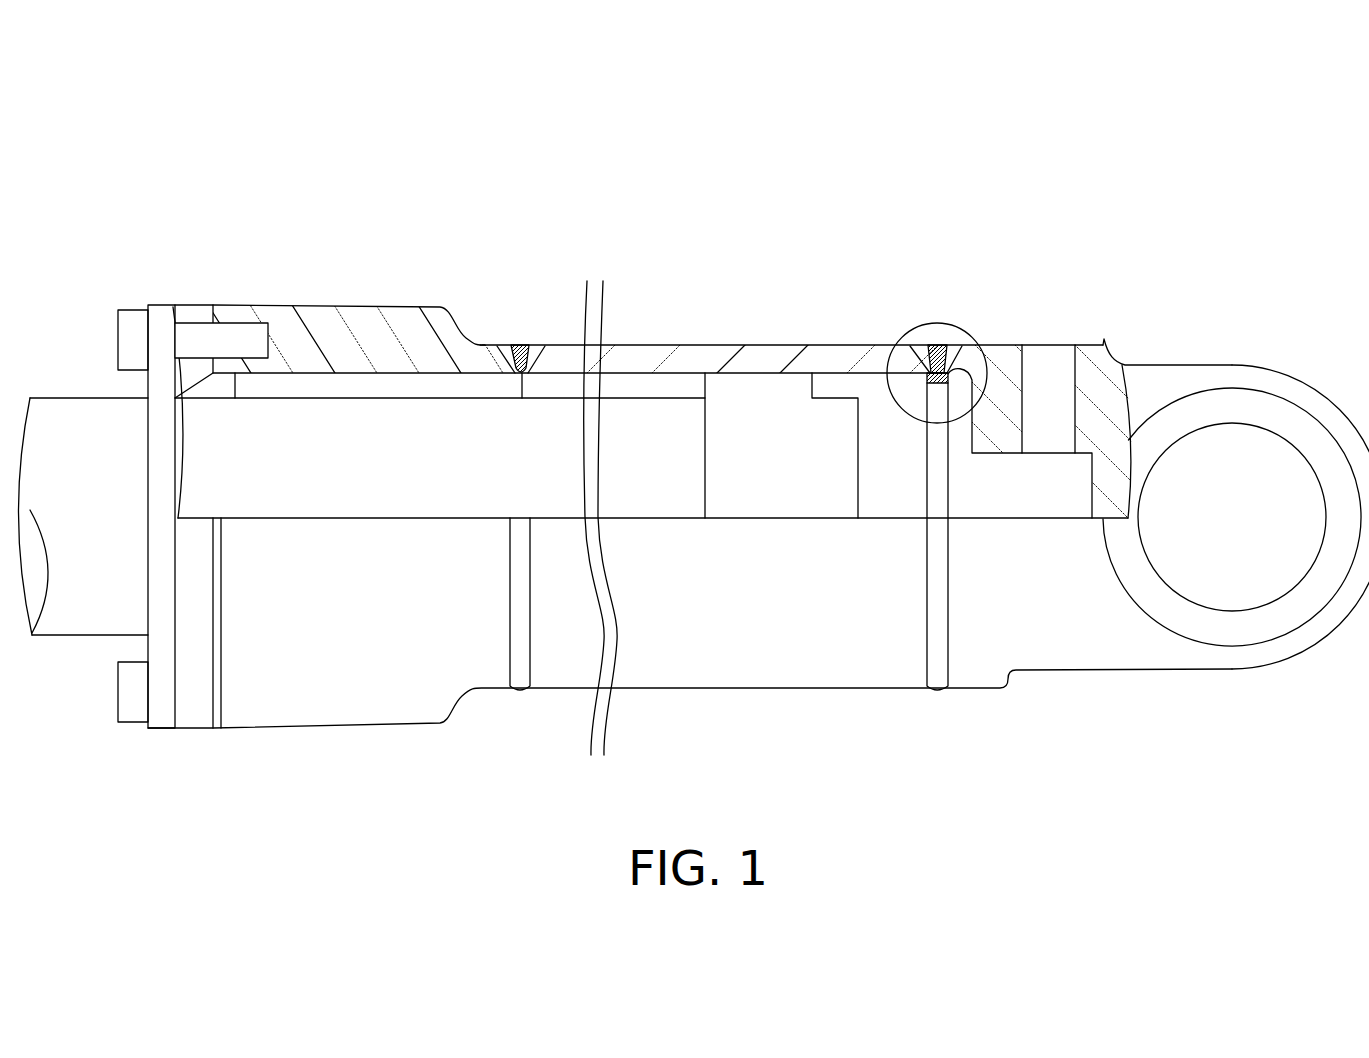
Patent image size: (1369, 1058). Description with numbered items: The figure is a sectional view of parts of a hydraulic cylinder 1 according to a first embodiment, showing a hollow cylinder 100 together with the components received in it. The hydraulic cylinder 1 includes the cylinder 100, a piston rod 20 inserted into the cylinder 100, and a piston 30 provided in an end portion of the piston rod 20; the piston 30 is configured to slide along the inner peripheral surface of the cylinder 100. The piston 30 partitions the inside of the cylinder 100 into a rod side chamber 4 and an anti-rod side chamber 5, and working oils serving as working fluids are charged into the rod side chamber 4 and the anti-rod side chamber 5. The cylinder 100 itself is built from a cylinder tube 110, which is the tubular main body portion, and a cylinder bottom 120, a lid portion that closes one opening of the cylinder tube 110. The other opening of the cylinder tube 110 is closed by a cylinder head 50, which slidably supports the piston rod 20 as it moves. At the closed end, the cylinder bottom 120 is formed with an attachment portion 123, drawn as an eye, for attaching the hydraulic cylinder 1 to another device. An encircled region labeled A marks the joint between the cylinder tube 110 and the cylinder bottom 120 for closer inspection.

The hydraulic cylinder 1 is at (1113, 165).
The rod side chamber 4 is at (557, 390).
The anti-rod side chamber 5 is at (870, 390).
The piston rod 20 is at (425, 458).
The piston 30 is at (765, 453).
The cylinder head 50 is at (190, 387).
The cylinder 100 is at (693, 344).
The cylinder tube 110 is at (820, 360).
The cylinder bottom 120 is at (1085, 357).
The attachment portion 123 is at (1234, 424).
The welded portion A is at (953, 326).